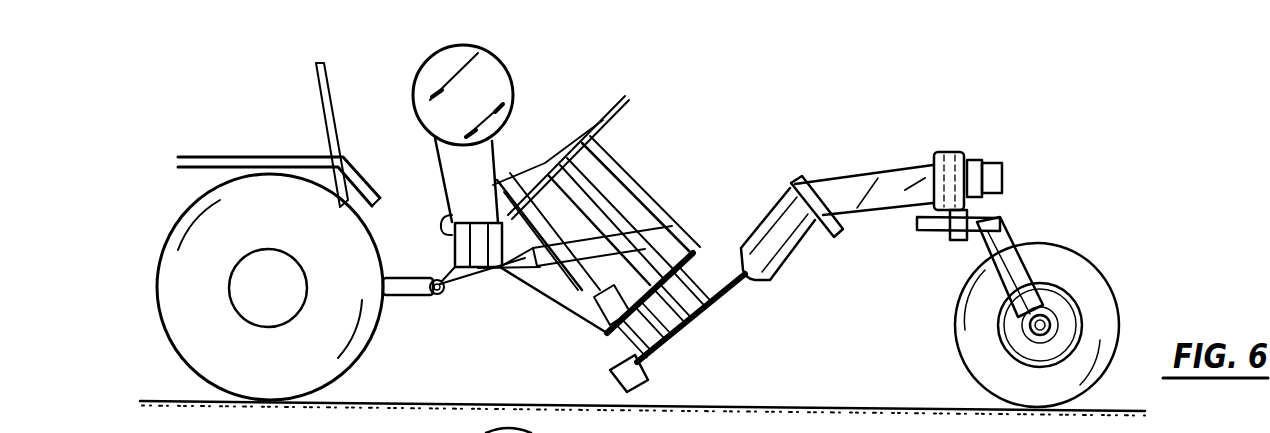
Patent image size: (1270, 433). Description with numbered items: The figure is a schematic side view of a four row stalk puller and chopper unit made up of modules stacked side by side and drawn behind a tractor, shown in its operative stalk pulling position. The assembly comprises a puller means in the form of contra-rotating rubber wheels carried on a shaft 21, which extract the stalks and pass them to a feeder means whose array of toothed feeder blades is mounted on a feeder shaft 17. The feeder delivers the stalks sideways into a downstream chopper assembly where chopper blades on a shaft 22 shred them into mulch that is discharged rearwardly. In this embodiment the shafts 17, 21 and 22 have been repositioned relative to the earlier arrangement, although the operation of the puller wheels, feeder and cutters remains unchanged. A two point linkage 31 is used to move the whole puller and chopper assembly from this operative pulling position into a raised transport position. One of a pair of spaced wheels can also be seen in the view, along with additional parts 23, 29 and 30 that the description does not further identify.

The feeder shaft 17 is at (613, 235).
The shaft 21 is at (579, 291).
The shaft 22 is at (670, 227).
The linkage frame 23 is at (550, 292).
The rear wheel 29 is at (1070, 306).
The wheel fork 30 is at (999, 288).
The two point linkage 31 is at (425, 300).